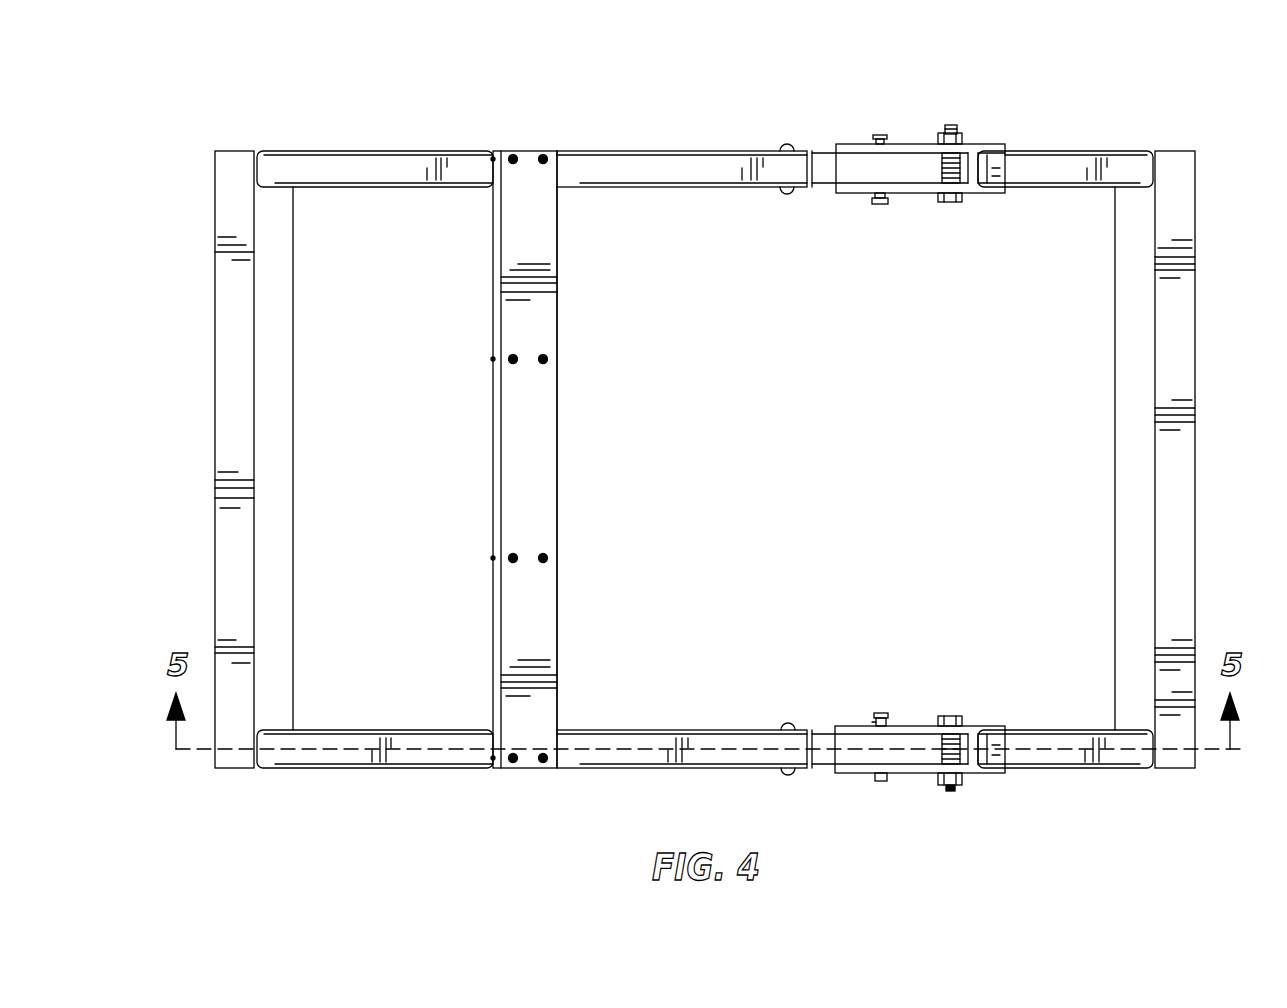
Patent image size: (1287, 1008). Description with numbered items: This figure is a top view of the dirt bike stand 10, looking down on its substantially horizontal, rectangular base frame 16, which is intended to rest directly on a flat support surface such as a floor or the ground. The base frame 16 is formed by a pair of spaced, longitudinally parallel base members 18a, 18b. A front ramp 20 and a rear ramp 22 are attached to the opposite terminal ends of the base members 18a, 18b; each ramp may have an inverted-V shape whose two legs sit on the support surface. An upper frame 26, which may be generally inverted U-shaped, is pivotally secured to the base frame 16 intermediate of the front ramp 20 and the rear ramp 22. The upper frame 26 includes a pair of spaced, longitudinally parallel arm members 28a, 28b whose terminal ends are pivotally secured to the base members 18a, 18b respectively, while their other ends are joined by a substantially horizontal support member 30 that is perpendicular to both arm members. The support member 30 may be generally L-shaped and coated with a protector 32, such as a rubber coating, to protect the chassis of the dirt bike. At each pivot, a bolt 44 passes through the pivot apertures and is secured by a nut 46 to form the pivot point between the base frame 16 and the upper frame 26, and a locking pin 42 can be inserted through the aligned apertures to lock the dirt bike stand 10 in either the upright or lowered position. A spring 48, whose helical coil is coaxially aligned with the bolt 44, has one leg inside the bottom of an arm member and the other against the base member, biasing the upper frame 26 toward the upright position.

The dirt bike stand 10 is at (154, 86).
The base frame 16 is at (637, 529).
The base member 18a is at (360, 162).
The base member 18b is at (415, 768).
The front ramp 20 is at (1180, 484).
The rear ramp 22 is at (235, 397).
The upper frame 26 is at (661, 563).
The arm member 28a is at (640, 168).
The arm member 28b is at (705, 745).
The support member 30 is at (530, 403).
The protector 32 is at (530, 497).
The locking pin 42 is at (878, 205).
The bolt 44 is at (950, 713).
The nut 46 is at (938, 138).
The spring 48 is at (950, 168).